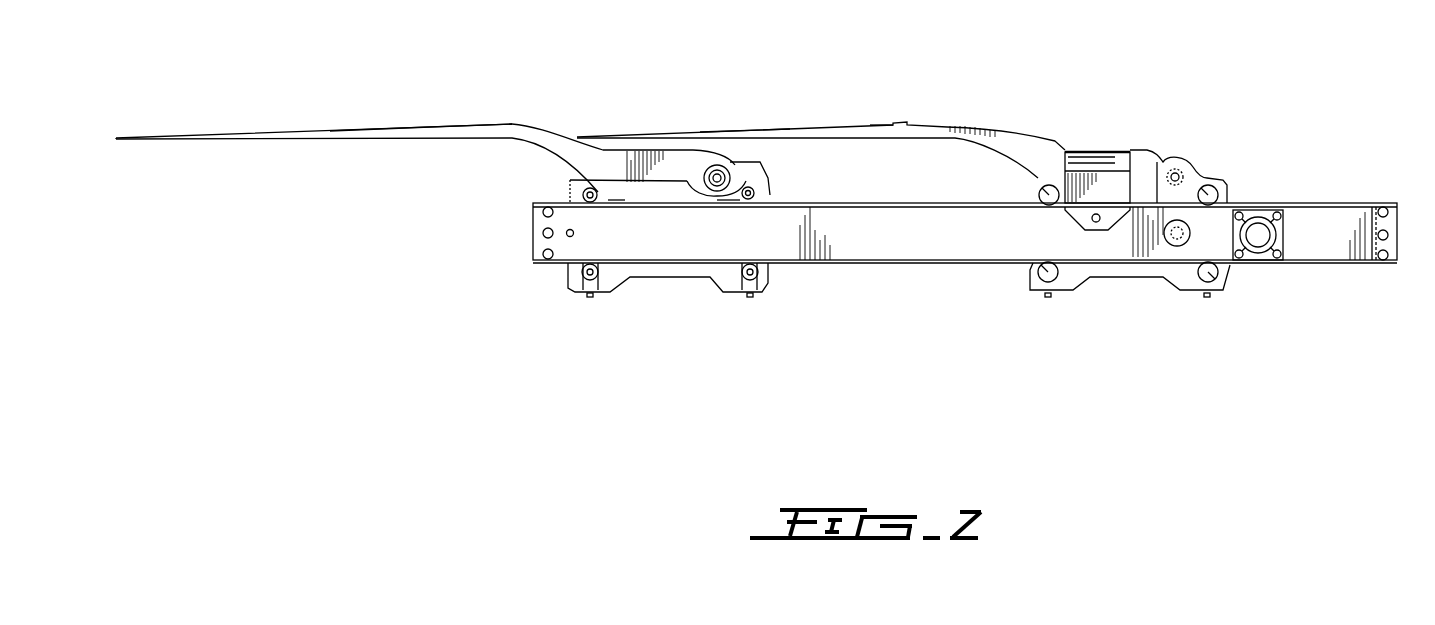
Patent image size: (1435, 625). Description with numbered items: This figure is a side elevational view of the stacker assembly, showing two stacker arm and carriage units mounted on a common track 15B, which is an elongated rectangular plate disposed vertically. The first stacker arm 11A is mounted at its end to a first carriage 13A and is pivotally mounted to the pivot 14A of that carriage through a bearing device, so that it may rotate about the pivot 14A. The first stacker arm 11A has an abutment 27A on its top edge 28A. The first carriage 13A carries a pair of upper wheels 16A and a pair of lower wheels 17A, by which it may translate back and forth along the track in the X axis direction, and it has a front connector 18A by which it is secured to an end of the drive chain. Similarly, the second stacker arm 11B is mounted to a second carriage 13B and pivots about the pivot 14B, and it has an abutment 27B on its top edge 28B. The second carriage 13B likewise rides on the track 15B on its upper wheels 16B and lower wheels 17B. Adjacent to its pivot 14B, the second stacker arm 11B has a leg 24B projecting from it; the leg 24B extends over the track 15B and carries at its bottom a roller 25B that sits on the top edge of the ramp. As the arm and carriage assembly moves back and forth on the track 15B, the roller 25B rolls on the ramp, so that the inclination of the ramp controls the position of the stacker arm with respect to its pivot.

The stacker arm 11A is at (265, 136).
The top edge 28A is at (368, 128).
The abutment 27A is at (433, 123).
The front connector 18A is at (612, 199).
The pivot 14A is at (718, 178).
The upper wheels 16A is at (583, 195).
The lower wheels 17A is at (582, 272).
The carriage 13A is at (667, 268).
The stacker arm 11B is at (827, 130).
The top edge 28B is at (733, 130).
The abutment 27B is at (900, 123).
The leg 24B is at (1100, 165).
The roller 25B is at (1096, 222).
The pivot 14B is at (1175, 173).
The upper wheels 16B is at (1043, 192).
The track 15B is at (1327, 220).
The carriage 13B is at (1163, 279).
The lower wheels 17B is at (1038, 272).